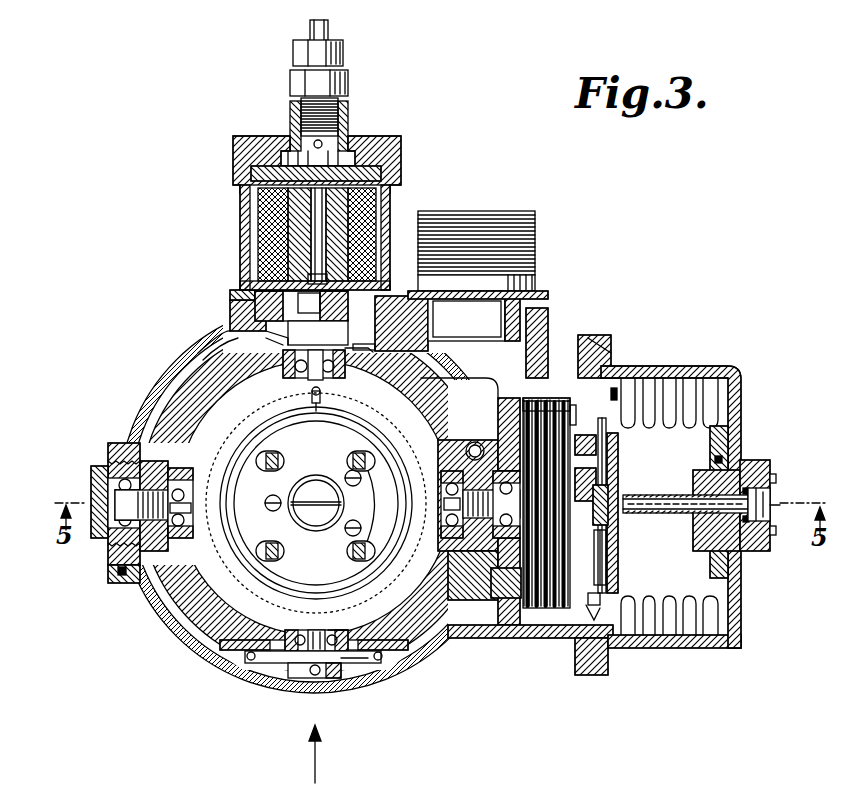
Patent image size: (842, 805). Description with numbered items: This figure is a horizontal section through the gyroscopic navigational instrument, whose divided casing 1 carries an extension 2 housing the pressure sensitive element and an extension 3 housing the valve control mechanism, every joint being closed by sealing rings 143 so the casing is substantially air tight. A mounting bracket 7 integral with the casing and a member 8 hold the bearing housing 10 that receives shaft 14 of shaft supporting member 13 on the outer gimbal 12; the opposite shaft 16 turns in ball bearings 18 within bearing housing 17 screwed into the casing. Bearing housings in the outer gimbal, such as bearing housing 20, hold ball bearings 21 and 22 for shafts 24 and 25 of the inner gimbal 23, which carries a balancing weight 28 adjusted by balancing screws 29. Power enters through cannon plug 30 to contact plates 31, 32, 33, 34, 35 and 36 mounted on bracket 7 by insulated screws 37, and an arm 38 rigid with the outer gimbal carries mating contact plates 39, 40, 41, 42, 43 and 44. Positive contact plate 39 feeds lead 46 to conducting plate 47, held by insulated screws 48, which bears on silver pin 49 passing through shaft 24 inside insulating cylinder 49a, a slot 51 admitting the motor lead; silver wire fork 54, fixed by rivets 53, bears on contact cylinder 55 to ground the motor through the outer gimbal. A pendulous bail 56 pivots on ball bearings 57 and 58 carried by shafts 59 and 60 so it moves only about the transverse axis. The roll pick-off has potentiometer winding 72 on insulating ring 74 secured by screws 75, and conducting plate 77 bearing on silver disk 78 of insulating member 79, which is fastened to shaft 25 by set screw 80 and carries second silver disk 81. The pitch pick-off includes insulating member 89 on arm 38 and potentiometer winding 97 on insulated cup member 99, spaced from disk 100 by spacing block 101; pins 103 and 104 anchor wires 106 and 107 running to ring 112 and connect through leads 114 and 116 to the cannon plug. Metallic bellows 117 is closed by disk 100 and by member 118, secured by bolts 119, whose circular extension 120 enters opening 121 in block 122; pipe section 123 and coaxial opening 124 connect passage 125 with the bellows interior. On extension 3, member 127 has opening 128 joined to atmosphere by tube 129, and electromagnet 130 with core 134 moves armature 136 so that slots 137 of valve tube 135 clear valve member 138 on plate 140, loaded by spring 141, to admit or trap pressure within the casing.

The divided casing 1 is at (143, 392).
The casing extension 2 is at (684, 354).
The casing extension 3 is at (238, 225).
The mounting bracket 7 is at (490, 400).
The member 8 is at (440, 550).
The bearing housing 10 is at (495, 465).
The outer gimbal 12 is at (192, 383).
The shaft supporting member 13 is at (465, 500).
The shaft 14 is at (450, 520).
The shaft 16 is at (112, 493).
The circular bearing housing 17 is at (92, 470).
The ball bearings 18 is at (120, 478).
The bearing housing 20 is at (286, 624).
The ball bearings 21 is at (288, 362).
The ball bearings 22 is at (326, 624).
The inner gimbal 23 is at (452, 630).
The shaft 24 is at (312, 368).
The shaft 25 is at (307, 622).
The balancing weight 28 is at (275, 427).
The balancing screws 29 is at (352, 478).
The cannon plug 30 is at (497, 203).
The electrical contact plate 31 is at (518, 393).
The electrical contact plate 32 is at (520, 392).
The electrical contact plate 33 is at (532, 392).
The electrical contact plate 34 is at (540, 392).
The electrical contact plate 35 is at (583, 330).
The electrical contact plate 36 is at (592, 340).
The insulated screws 37 is at (550, 395).
The arm 38 is at (520, 600).
The positive contact plate 39 is at (526, 600).
The negative contact plate 40 is at (532, 600).
The contact plate 41 is at (538, 600).
The contact plate 42 is at (546, 600).
The contact plate 43 is at (553, 600).
The contact plate 44 is at (590, 605).
The lead 46 is at (365, 342).
The conducting plate 47 is at (335, 362).
The insulated screws 48 is at (398, 325).
The silver pin 49 is at (324, 332).
The insulating cylinder 49a is at (400, 306).
The slot 51 is at (308, 403).
The rivets 53 is at (215, 330).
The silver wire fork 54 is at (225, 308).
The contact cylinder 55 is at (278, 342).
The pendulous bail 56 is at (140, 580).
The ball bearings 57 is at (438, 472).
The ball bearings 58 is at (175, 472).
The shaft 59 is at (440, 490).
The shaft 60 is at (175, 496).
The potentiometer winding 72 is at (375, 650).
The insulating ring 74 is at (240, 650).
The screws 75 is at (215, 642).
The conducting plate 77 is at (315, 668).
The silver disk 78 is at (335, 655).
The insulating member 79 is at (268, 655).
The set screw 80 is at (300, 668).
The second silver disk 81 is at (362, 652).
The insulating member 89 is at (470, 560).
The potentiometer winding 97 is at (588, 592).
The insulated cup member 99 is at (570, 414).
The disk 100 is at (600, 447).
The spacing block 101 is at (598, 482).
The pin 103 is at (597, 538).
The pin 104 is at (608, 462).
The wire 106 is at (598, 556).
The wire 107 is at (596, 428).
The ring 112 is at (607, 380).
The lead 114 is at (630, 633).
The lead 116 is at (605, 370).
The metallic bellows 117 is at (700, 637).
The member 118 is at (703, 437).
The bolts 119 is at (768, 470).
The circular extension 120 is at (728, 468).
The opening 121 is at (765, 505).
The block 122 is at (750, 458).
The pipe section 123 is at (652, 508).
The coaxial opening 124 is at (660, 490).
The passage 125 is at (760, 493).
The member 127 is at (388, 132).
The opening 128 is at (345, 138).
The tube 129 is at (320, 22).
The electromagnet 130 is at (262, 243).
The core 134 is at (285, 198).
The valve tube 135 is at (305, 215).
The armature 136 is at (375, 165).
The slots 137 is at (300, 272).
The valve member 138 is at (296, 288).
The plate 140 is at (224, 288).
The spring 141 is at (350, 290).
The sealing rings 143 is at (105, 565).